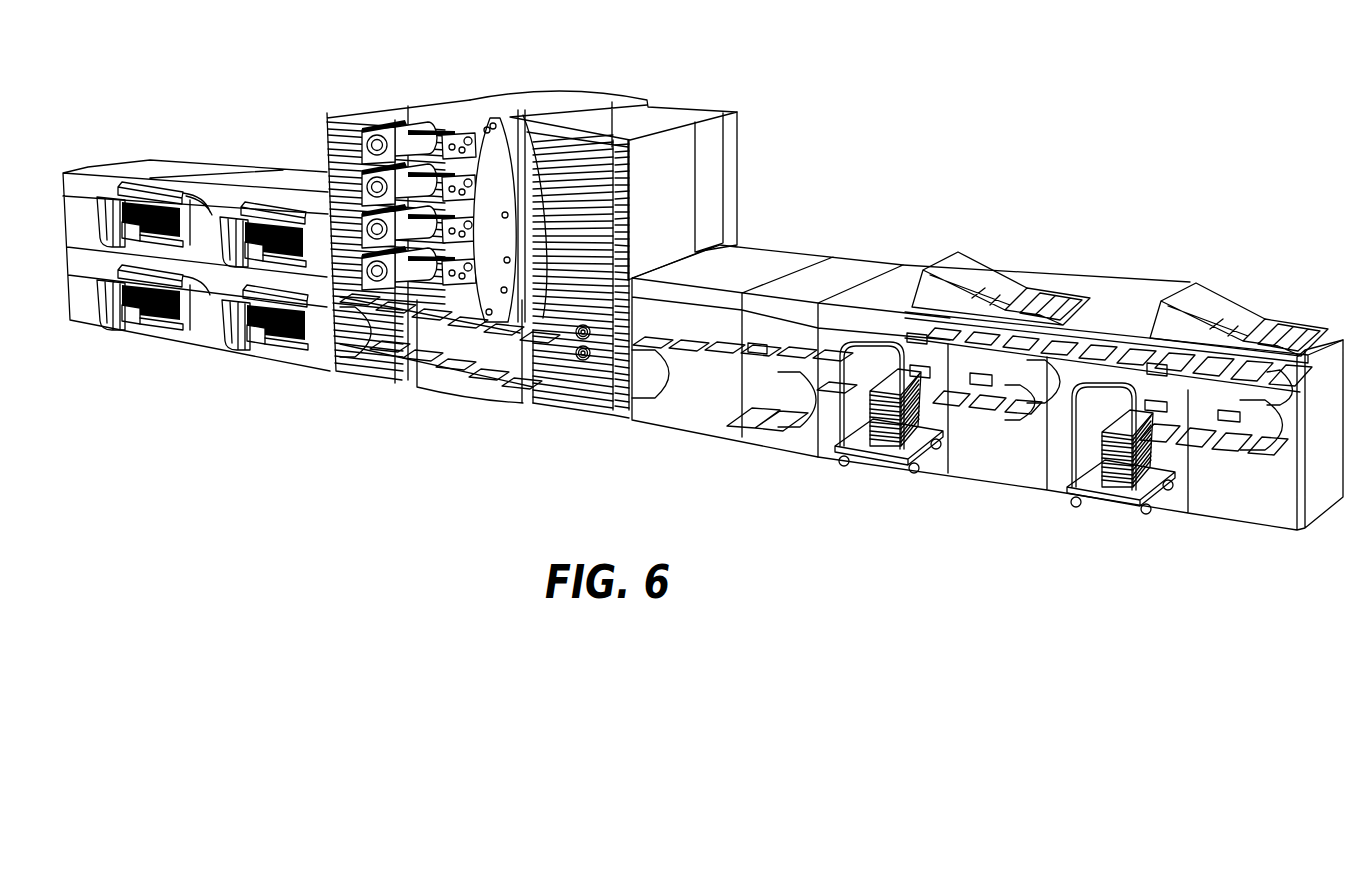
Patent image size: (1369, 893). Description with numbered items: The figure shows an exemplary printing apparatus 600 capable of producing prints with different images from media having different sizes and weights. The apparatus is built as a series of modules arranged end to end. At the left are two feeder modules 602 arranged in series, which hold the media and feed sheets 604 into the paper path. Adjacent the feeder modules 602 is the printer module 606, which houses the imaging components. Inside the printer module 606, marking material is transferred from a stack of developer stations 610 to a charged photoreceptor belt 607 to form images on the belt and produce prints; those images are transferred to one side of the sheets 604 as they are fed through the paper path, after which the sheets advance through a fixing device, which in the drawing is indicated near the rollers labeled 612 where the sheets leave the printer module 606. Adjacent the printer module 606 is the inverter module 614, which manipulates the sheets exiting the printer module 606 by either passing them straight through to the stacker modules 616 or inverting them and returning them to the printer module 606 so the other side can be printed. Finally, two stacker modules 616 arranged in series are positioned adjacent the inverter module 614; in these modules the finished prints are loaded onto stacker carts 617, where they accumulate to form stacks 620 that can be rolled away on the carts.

The printing apparatus 600 is at (855, 92).
The feeder module 602 is at (157, 187).
The sheet 604 is at (207, 207).
The printer module 606 is at (617, 90).
The photoreceptor belt 607 is at (510, 140).
The developer station 610 is at (392, 108).
The fuser rollers 612 is at (583, 357).
The inverter module 614 is at (853, 263).
The stacker module 616 is at (1117, 308).
The stacker cart 617 is at (893, 463).
The stack 620 is at (870, 440).